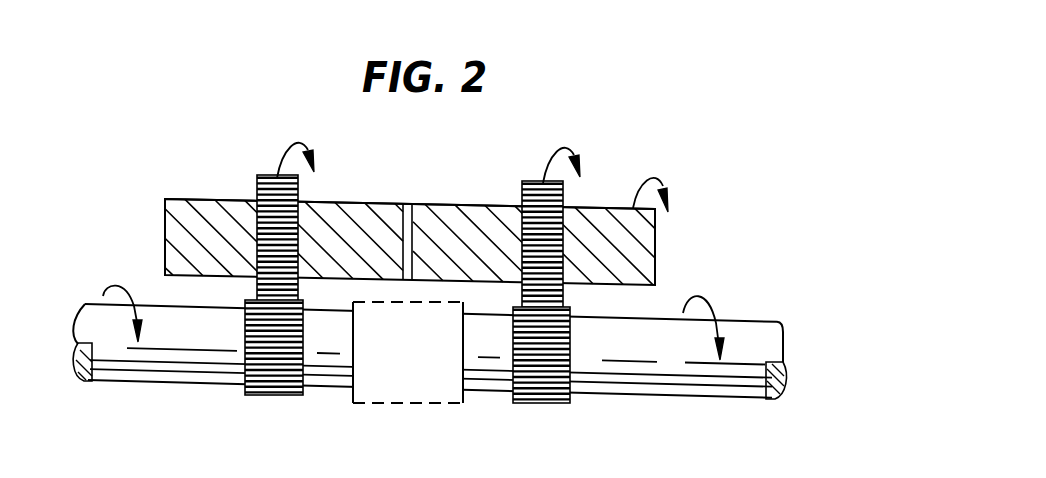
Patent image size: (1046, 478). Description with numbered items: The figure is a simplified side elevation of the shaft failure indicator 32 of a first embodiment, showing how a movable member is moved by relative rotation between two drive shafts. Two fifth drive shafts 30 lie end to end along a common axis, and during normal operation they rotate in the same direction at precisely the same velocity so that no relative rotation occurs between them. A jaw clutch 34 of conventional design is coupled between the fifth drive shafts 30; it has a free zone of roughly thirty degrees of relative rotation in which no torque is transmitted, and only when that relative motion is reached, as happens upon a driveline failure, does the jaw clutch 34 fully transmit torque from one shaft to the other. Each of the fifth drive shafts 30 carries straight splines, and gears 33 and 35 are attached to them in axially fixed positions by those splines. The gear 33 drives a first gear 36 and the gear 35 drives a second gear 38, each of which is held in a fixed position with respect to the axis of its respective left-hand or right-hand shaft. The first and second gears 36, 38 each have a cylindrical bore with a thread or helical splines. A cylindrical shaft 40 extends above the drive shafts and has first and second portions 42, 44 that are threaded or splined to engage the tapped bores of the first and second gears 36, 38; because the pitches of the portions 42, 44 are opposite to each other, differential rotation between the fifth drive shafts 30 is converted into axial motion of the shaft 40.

The fifth drive shafts 30 is at (147, 381).
The shaft failure indicator 32 is at (380, 207).
The gear 33 is at (287, 397).
The jaw clutch 34 is at (410, 403).
The gear 35 is at (537, 403).
The first gear 36 is at (300, 195).
The second gear 38 is at (565, 196).
The cylindrical shaft 40 is at (380, 211).
The first portion 42 is at (217, 199).
The second portion 44 is at (467, 205).